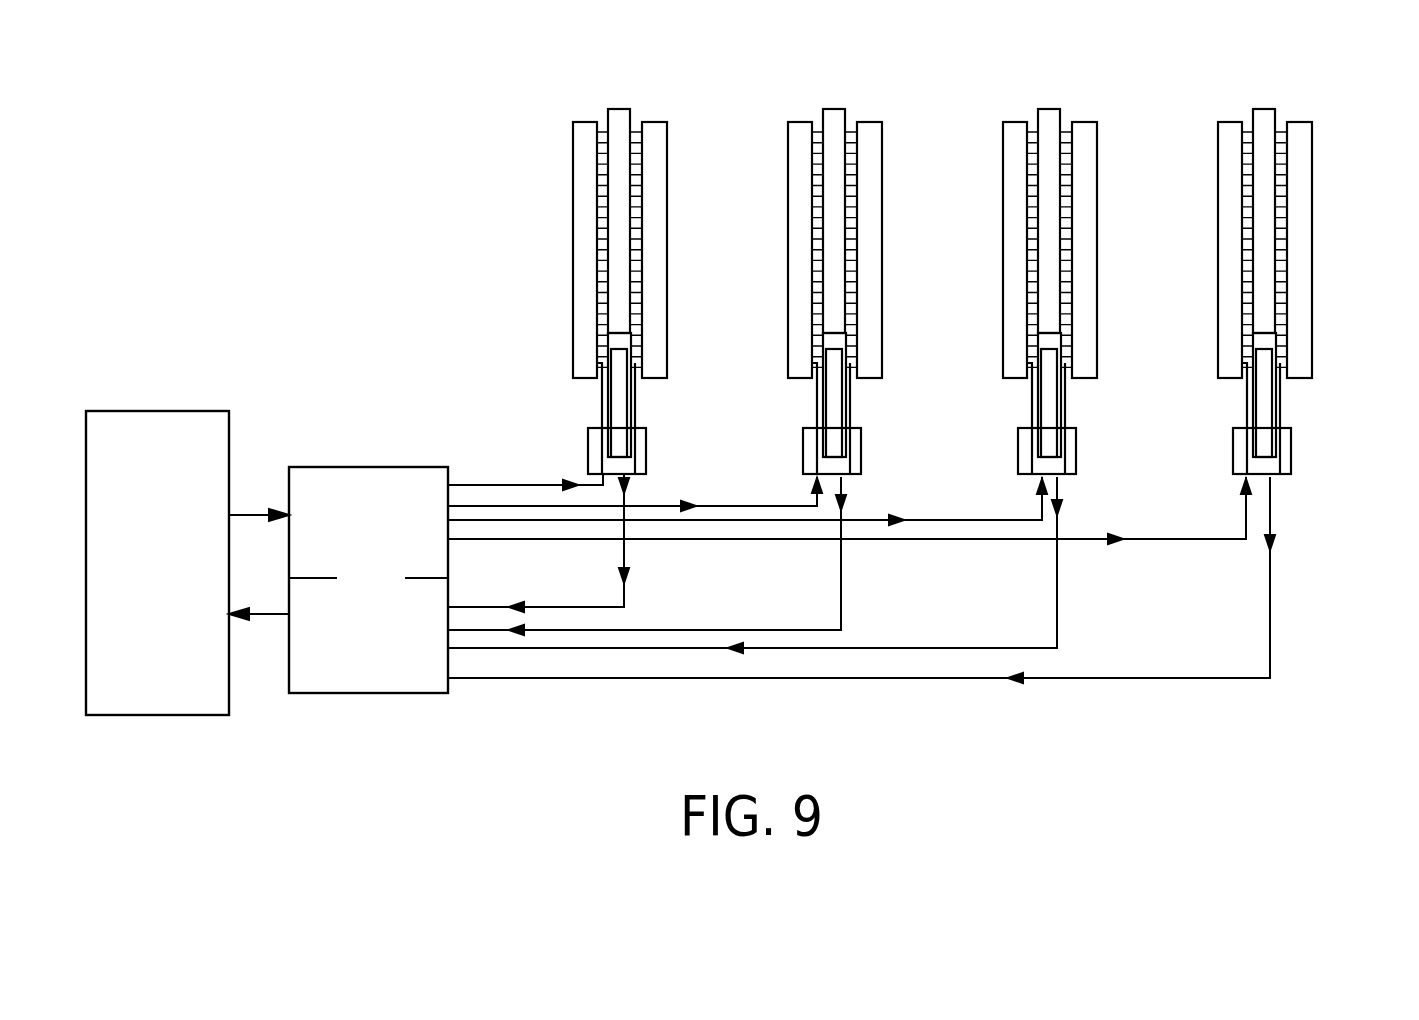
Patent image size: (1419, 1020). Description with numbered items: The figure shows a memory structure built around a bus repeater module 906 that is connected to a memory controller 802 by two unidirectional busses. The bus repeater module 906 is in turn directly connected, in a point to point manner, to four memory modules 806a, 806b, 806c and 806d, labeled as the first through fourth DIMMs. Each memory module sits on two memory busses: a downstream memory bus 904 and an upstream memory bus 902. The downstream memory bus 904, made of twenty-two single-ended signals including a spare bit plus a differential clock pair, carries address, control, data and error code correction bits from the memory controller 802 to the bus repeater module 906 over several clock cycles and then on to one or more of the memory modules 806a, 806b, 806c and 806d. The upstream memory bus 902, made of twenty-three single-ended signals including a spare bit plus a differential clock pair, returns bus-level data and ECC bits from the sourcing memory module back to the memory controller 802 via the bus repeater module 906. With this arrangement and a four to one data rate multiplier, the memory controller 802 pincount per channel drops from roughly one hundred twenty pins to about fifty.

The memory controller 802 is at (143, 705).
The memory module 806a is at (652, 185).
The memory module 806b is at (870, 188).
The memory module 806c is at (1083, 185).
The memory module 806d is at (1300, 187).
The upstream memory bus 902 is at (270, 618).
The downstream memory bus 904 is at (247, 513).
The bus repeater module 906 is at (352, 467).